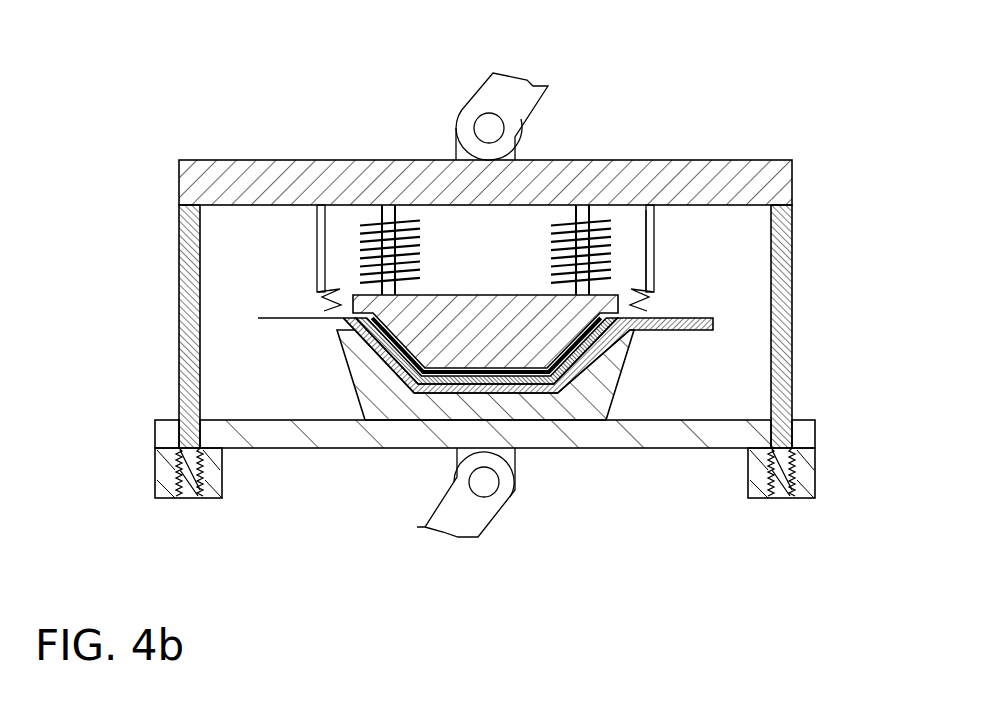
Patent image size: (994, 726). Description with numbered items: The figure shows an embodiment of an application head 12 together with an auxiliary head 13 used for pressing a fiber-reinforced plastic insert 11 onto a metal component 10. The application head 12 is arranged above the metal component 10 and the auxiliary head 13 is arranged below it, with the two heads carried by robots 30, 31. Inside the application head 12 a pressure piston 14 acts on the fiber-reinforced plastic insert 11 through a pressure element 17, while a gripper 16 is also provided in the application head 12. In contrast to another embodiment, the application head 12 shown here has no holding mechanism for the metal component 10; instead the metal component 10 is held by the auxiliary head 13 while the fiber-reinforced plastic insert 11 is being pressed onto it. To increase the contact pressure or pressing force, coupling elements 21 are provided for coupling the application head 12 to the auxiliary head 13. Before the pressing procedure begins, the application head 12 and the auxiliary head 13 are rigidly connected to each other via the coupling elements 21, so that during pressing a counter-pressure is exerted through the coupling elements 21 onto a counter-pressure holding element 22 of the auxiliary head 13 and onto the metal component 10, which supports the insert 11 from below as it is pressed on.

The metal component 10 is at (700, 324).
The fiber-reinforced plastic insert 11 is at (410, 362).
The application head 12 is at (496, 238).
The auxiliary head 13 is at (152, 420).
The pressure piston 14 is at (537, 337).
The gripper 16 is at (648, 228).
The pressure element 17 is at (388, 242).
The coupling element 21 is at (782, 388).
The counter-pressure holding element 22 is at (372, 378).
The robot 30 is at (489, 128).
The robot 31 is at (484, 482).